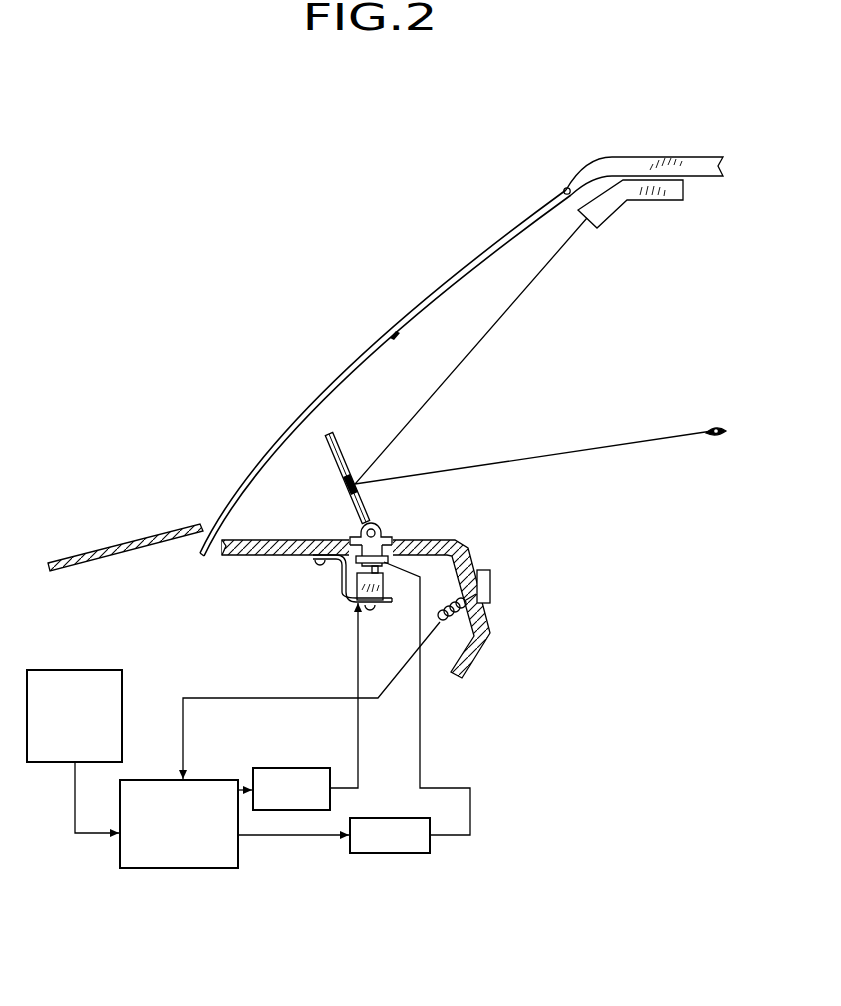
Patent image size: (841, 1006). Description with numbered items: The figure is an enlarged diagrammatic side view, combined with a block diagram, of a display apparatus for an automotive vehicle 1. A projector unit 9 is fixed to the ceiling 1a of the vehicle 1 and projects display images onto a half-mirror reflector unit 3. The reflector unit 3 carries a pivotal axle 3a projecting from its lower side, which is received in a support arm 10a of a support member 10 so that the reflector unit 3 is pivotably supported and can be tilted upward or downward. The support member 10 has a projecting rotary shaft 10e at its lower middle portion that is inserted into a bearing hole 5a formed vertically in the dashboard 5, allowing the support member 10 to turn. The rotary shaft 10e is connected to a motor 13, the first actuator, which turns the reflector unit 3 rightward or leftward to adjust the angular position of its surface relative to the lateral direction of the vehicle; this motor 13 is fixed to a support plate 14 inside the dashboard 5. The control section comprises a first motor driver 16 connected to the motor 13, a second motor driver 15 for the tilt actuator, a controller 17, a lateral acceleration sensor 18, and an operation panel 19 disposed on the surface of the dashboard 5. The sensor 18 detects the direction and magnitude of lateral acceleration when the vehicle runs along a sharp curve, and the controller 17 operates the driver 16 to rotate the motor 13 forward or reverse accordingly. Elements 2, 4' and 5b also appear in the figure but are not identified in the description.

The vehicle 1 is at (115, 546).
The ceiling 1a is at (637, 166).
The windshield 2 is at (440, 288).
The half-mirror reflector unit 3 is at (332, 438).
The pivotal axle 3a is at (381, 528).
The driver's eye point 4' is at (540, 352).
The dashboard 5 is at (273, 547).
The bearing hole 5a is at (258, 476).
The panel bent portion 5b is at (470, 556).
The projector unit 9 is at (664, 202).
The support member 10 is at (392, 542).
The support arm 10a is at (323, 480).
The rotary shaft 10e is at (394, 560).
The motor 13 is at (382, 602).
The support plate 14 is at (340, 578).
The second motor driver 15 is at (390, 810).
The first motor driver 16 is at (303, 768).
The controller 17 is at (202, 870).
The lateral acceleration sensor 18 is at (125, 695).
The operation panel 19 is at (492, 588).